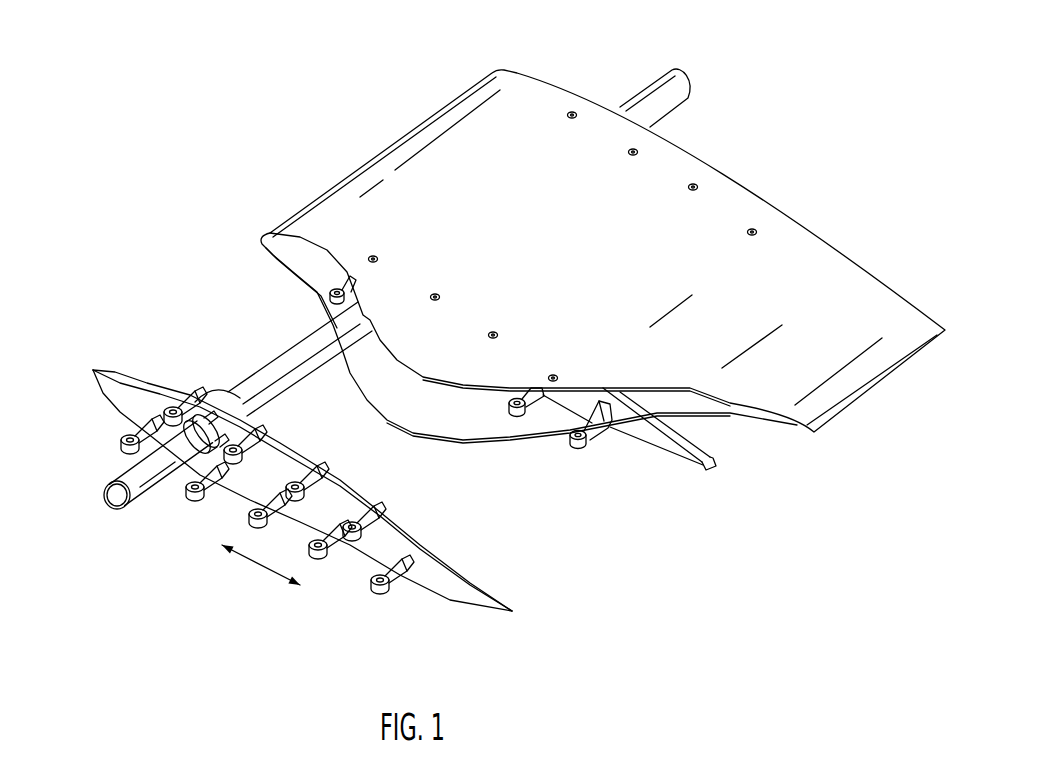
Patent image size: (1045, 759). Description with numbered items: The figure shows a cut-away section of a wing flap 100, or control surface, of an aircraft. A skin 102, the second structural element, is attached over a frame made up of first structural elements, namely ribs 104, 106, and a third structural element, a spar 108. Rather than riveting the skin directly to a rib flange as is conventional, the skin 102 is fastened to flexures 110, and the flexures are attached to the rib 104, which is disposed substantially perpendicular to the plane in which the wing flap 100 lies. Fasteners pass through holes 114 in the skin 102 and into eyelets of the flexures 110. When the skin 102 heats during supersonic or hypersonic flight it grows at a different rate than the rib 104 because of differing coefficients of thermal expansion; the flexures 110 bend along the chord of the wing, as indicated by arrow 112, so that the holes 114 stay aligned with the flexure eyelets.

The wing flap 100 is at (733, 99).
The skin 102 is at (727, 203).
The rib 104 is at (507, 613).
The rib 106 is at (713, 467).
The spar 108 is at (100, 488).
The flexures 110 is at (382, 591).
The arrow 112 is at (258, 566).
The holes 114 is at (370, 256).